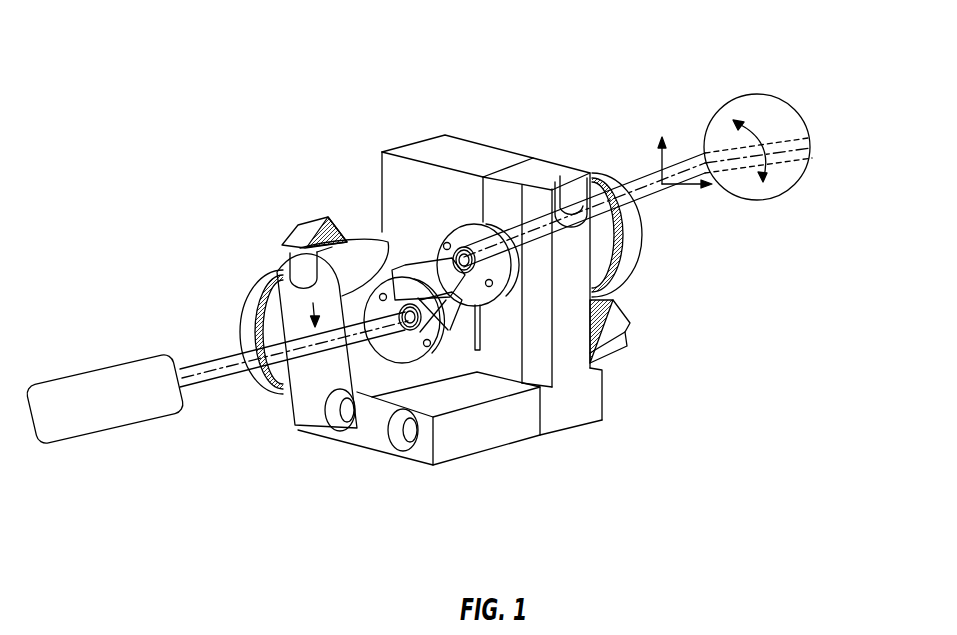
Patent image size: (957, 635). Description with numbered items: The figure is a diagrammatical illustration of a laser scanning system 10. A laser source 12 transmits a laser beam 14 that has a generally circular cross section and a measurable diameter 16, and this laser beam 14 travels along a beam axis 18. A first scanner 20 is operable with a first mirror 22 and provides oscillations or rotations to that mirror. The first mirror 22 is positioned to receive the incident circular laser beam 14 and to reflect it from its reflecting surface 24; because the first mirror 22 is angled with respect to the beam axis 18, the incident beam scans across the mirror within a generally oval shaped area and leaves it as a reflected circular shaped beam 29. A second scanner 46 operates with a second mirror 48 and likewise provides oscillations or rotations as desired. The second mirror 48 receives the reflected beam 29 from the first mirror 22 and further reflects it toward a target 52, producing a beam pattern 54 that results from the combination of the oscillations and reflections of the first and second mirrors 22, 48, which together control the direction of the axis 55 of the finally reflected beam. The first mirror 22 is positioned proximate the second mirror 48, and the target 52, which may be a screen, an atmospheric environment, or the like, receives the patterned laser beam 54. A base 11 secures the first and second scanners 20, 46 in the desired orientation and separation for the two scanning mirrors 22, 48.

The laser scanning system 10 is at (566, 68).
The base 11 is at (592, 402).
The laser source 12 is at (77, 423).
The laser beam 14 is at (217, 358).
The diameter 16 is at (322, 366).
The beam axis 18 is at (237, 368).
The first scanner 20 is at (248, 286).
The first mirror 22 is at (430, 322).
The reflecting surface 24 is at (405, 316).
The reflected circular shaped beam 29 is at (440, 307).
The second scanner 46 is at (632, 253).
The second mirror 48 is at (417, 275).
The target 52 is at (790, 167).
The beam pattern 54 is at (752, 128).
The axis 55 is at (637, 197).